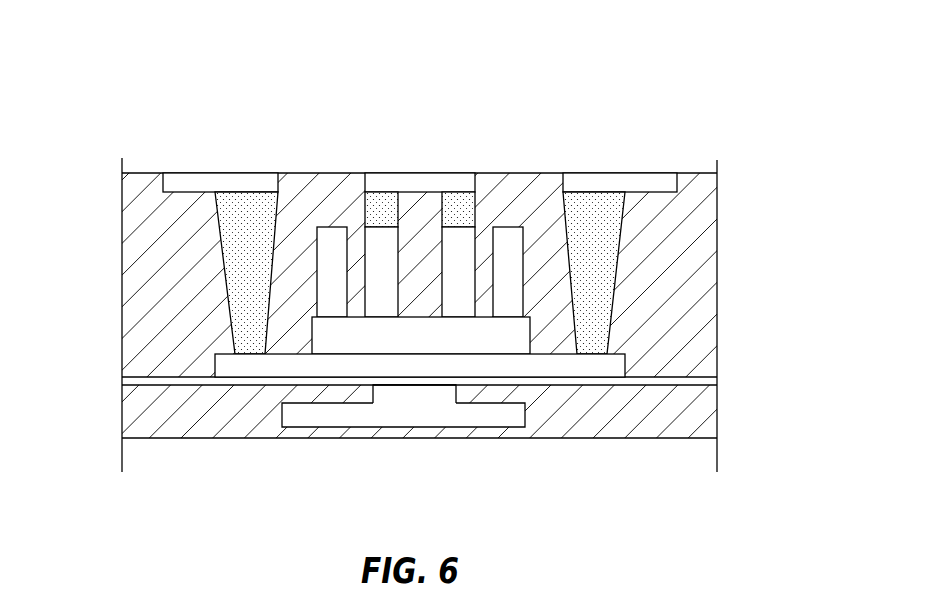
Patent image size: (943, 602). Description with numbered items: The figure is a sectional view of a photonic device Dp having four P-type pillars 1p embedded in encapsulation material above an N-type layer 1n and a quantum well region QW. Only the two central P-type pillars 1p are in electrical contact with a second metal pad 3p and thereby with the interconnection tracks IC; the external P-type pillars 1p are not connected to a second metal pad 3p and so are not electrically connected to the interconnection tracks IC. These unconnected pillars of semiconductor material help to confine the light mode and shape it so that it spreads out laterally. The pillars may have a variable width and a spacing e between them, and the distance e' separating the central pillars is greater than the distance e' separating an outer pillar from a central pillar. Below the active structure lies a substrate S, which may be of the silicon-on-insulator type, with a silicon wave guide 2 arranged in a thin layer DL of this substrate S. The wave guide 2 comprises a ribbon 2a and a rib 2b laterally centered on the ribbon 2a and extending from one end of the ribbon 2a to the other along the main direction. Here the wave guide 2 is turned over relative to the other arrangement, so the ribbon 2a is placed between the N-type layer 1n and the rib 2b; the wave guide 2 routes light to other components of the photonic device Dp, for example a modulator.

The P-type pillar 1p is at (367, 233).
The second metal pad 3p is at (240, 268).
The interconnection track IC is at (202, 173).
The quantum well layer QW is at (421, 335).
The N-type layer 1n is at (623, 363).
The substrate S is at (110, 380).
The thin layer DL is at (708, 417).
The wave guide 2 is at (392, 437).
The ribbon 2a is at (313, 418).
The rib 2b is at (428, 395).
The photonic device Dp is at (628, 110).
The spacing e is at (427, 101).
The distance e' is at (348, 112).